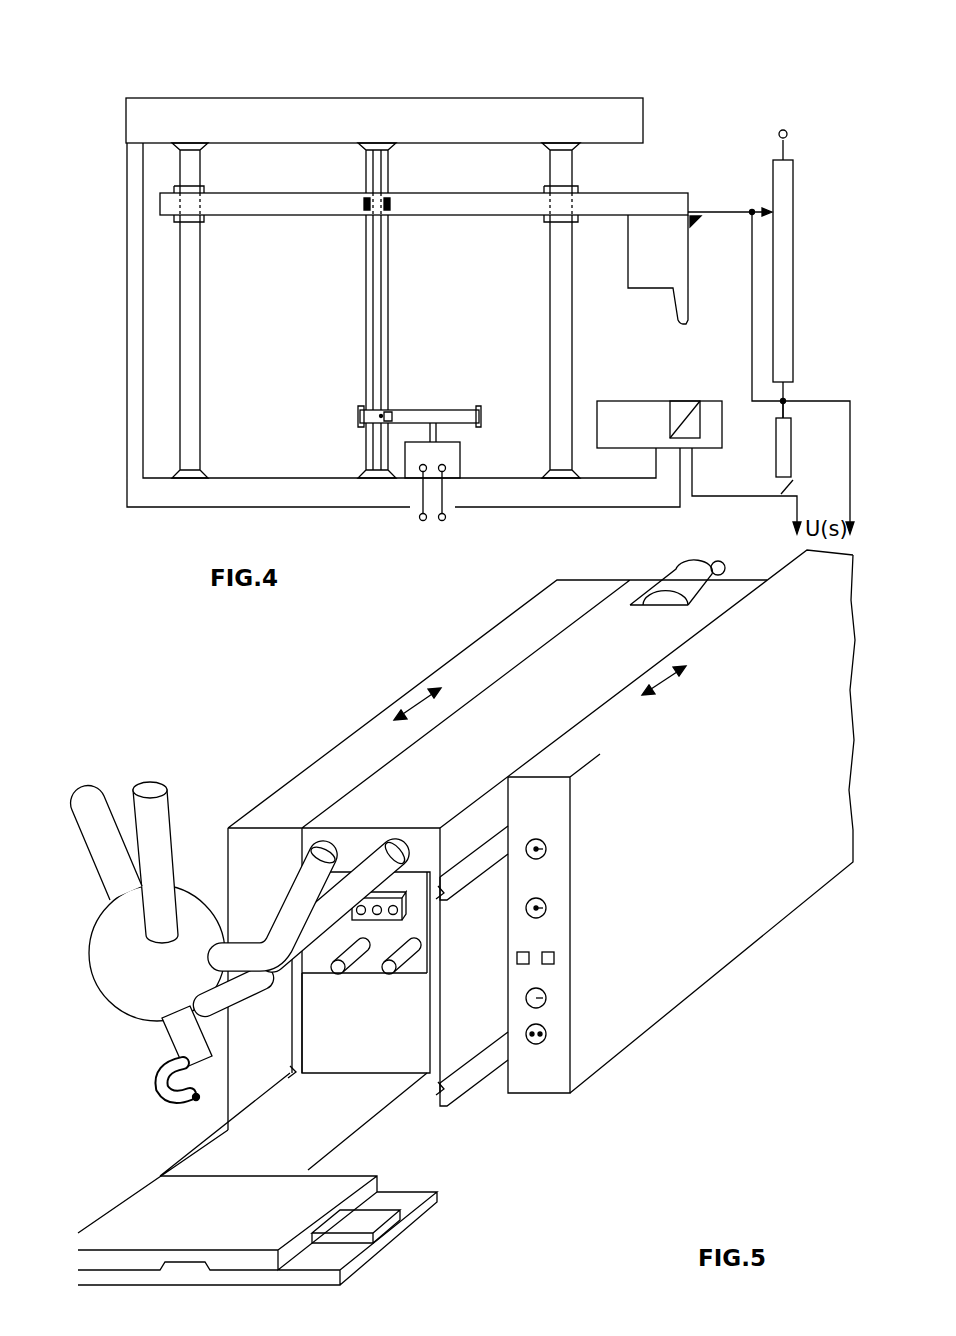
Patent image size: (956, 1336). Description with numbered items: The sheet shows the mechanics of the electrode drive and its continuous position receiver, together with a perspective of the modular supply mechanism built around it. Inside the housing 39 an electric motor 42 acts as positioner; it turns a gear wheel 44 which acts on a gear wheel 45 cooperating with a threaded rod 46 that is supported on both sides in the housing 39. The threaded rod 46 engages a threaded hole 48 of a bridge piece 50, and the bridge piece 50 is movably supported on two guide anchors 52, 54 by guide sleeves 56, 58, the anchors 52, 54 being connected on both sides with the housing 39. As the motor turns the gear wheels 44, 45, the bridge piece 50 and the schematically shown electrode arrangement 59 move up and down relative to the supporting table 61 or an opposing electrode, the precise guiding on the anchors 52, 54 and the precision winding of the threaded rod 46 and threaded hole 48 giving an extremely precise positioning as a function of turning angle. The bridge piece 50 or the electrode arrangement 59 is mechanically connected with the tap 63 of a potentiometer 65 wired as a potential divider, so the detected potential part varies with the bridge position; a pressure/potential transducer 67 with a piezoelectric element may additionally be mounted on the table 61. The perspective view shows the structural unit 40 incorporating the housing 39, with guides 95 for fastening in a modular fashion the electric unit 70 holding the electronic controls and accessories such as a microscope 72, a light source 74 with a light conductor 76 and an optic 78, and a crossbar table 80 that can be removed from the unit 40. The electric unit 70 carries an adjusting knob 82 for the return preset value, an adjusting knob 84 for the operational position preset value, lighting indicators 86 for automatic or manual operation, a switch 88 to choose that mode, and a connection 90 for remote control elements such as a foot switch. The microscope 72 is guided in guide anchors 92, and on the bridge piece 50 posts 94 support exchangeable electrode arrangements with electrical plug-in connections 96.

In FIG. 4, the housing 39 is at (250, 112).
In FIG. 5, the housing 39 is at (637, 592).
In FIG. 5, the structural unit 40 is at (596, 642).
In FIG. 4, the electric motor 42 is at (450, 458).
In FIG. 4, the gear wheel 44 is at (460, 415).
In FIG. 4, the gear wheel 45 is at (390, 412).
In FIG. 4, the threaded rod 46 is at (378, 365).
In FIG. 4, the threaded hole 48 is at (365, 207).
In FIG. 4, the bridge piece 50 is at (468, 203).
In FIG. 5, the bridge piece 50 is at (312, 962).
In FIG. 4, the guide anchor 52 is at (190, 372).
In FIG. 4, the guide anchor 54 is at (562, 362).
In FIG. 4, the guide sleeve 56 is at (172, 188).
In FIG. 4, the guide sleeve 58 is at (577, 190).
In FIG. 4, the electrode arrangement 59 is at (676, 247).
In FIG. 4, the supporting table 61 is at (625, 418).
In FIG. 4, the tap 63 is at (720, 210).
In FIG. 4, the potentiometer 65 is at (785, 356).
In FIG. 4, the pressure/potential transducer 67 is at (688, 402).
In FIG. 5, the electric unit 70 is at (777, 568).
In FIG. 5, the microscope 72 is at (162, 832).
In FIG. 5, the light source 74 is at (467, 663).
In FIG. 5, the light conductor 76 is at (160, 1072).
In FIG. 5, the optic 78 is at (186, 1098).
In FIG. 5, the crossbar table 80 is at (362, 1271).
In FIG. 5, the adjusting knob 82 is at (546, 849).
In FIG. 5, the adjusting knob 84 is at (546, 908).
In FIG. 5, the lighting indicators 86 is at (556, 958).
In FIG. 5, the switch 88 is at (546, 998).
In FIG. 5, the connection 90 is at (546, 1034).
In FIG. 5, the guide anchors 92 is at (320, 862).
In FIG. 5, the posts 94 is at (365, 996).
In FIG. 5, the guides 95 is at (292, 898).
In FIG. 5, the electrical plug-in connections 96 is at (402, 910).